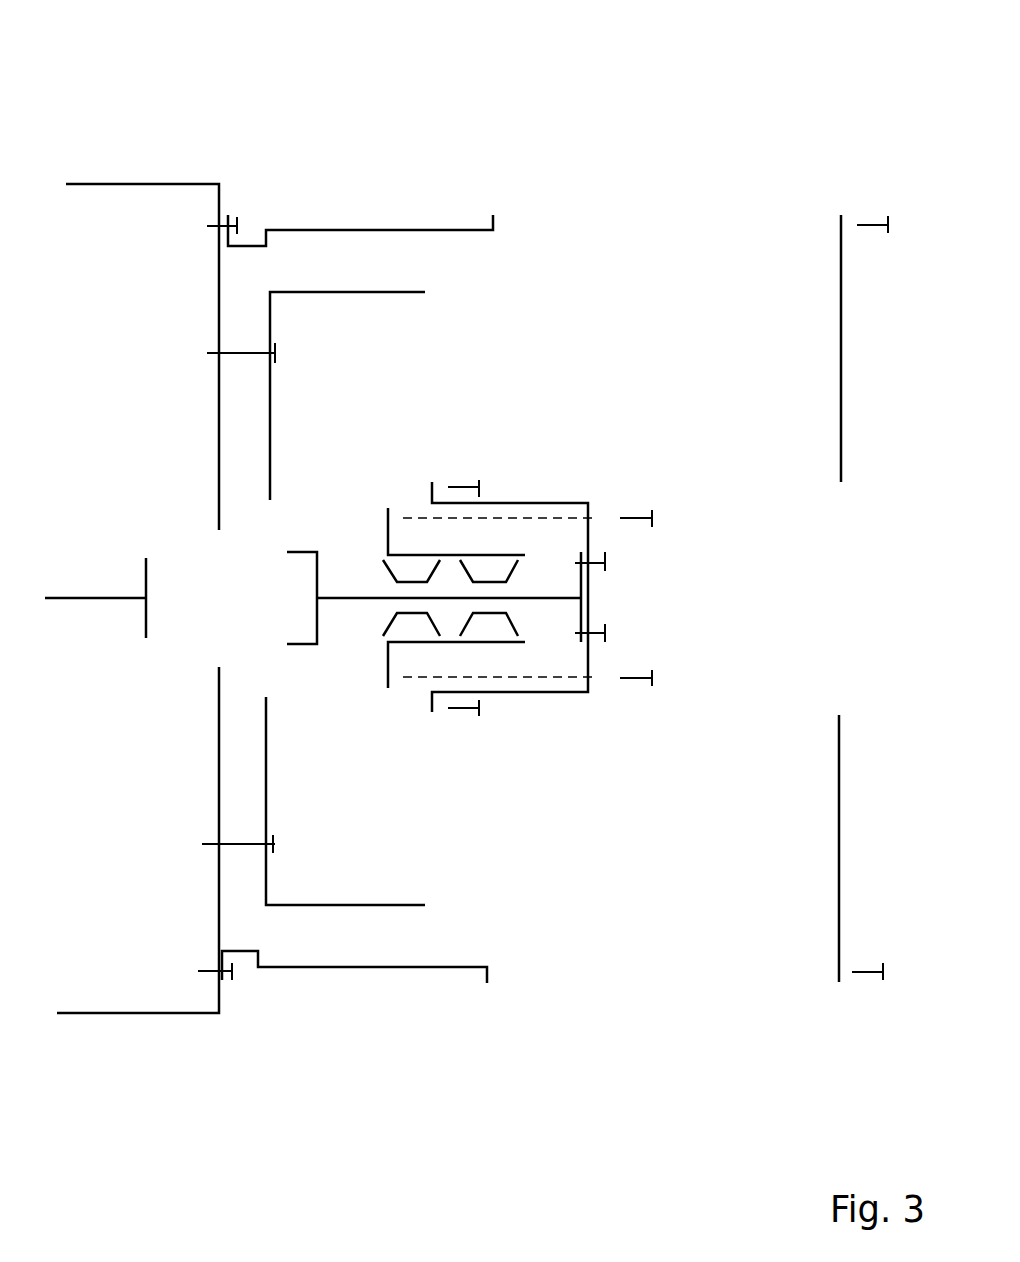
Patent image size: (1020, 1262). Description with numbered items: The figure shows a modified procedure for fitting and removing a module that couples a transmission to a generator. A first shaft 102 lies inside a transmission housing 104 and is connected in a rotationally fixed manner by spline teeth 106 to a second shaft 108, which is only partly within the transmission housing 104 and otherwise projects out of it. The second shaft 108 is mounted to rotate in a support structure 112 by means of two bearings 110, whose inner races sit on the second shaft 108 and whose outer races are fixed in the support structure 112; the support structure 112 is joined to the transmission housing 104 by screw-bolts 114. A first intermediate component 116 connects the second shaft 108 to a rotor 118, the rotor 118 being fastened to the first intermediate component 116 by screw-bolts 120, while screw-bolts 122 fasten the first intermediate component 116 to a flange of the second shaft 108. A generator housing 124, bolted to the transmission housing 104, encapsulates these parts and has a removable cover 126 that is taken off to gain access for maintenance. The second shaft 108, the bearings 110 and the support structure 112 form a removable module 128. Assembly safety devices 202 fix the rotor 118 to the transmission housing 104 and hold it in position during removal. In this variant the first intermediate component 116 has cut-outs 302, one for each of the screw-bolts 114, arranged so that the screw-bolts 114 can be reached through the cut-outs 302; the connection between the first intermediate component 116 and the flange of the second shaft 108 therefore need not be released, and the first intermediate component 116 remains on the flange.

The first shaft 102 is at (93, 598).
The transmission housing 104 is at (148, 184).
The spline teeth 106 is at (307, 645).
The second shaft 108 is at (548, 598).
The bearings 110 is at (493, 573).
The support structure 112 is at (427, 553).
The screw-bolts 114 is at (456, 712).
The first intermediate component 116 is at (550, 502).
The rotor 118 is at (349, 292).
The screw-bolts 120 is at (637, 510).
The screw-bolts 122 is at (607, 560).
The generator housing 124 is at (292, 230).
The removable cover 126 is at (840, 847).
The module 128 is at (500, 712).
The assembly safety devices 202 is at (247, 353).
The cut-outs 302 is at (588, 513).